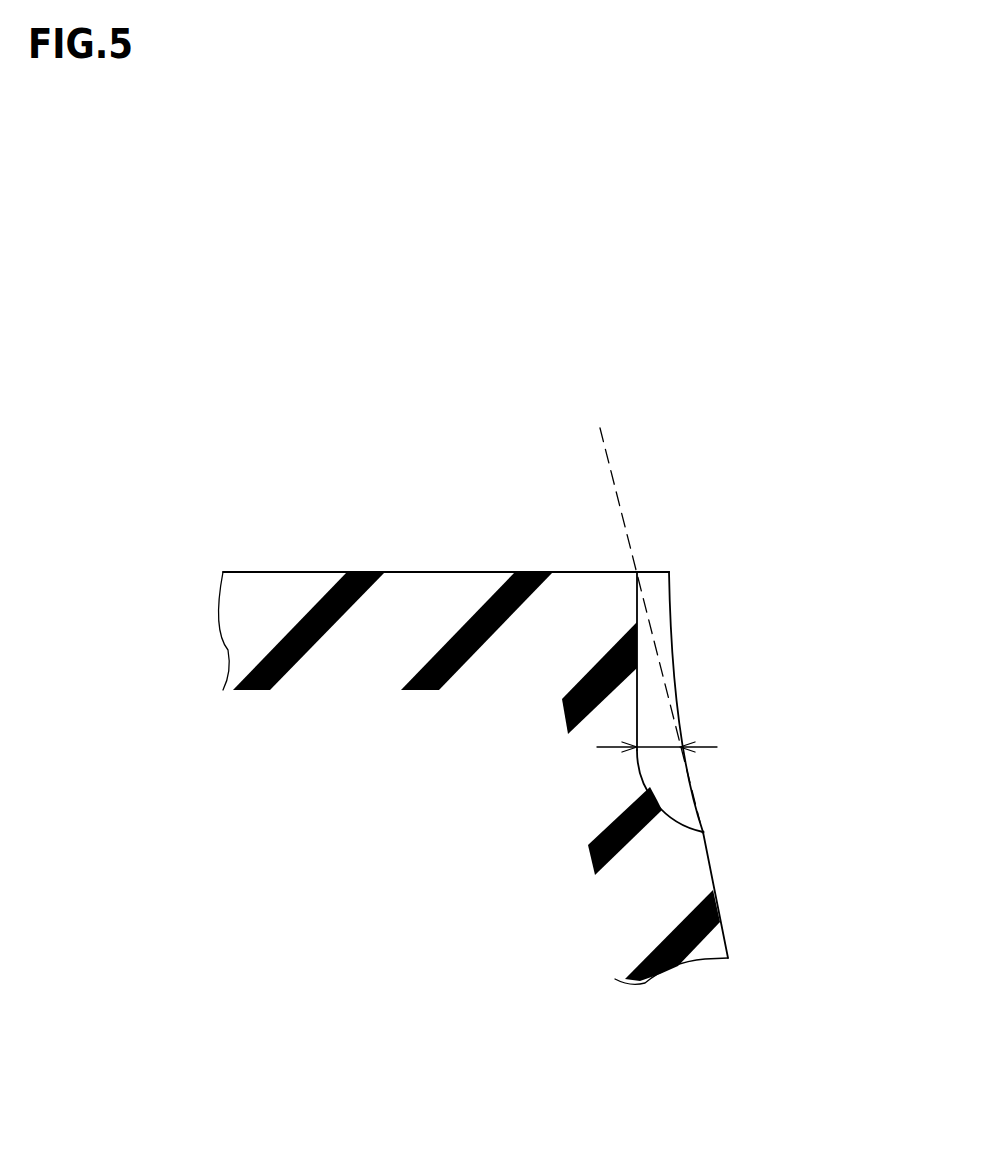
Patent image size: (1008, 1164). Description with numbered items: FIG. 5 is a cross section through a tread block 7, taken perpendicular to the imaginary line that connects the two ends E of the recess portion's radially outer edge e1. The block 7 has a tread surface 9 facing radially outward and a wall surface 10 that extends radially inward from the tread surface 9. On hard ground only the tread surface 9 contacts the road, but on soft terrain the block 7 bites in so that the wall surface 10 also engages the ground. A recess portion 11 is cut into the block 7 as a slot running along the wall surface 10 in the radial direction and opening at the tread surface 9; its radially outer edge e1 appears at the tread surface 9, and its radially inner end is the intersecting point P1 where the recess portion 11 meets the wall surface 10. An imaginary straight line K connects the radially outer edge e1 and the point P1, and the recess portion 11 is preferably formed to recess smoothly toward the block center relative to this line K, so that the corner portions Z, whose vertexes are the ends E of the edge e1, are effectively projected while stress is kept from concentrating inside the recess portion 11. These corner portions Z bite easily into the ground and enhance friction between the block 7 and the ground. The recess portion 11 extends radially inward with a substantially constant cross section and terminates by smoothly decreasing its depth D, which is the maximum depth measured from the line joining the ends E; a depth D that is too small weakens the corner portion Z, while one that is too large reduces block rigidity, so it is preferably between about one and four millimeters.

The block 7 is at (393, 902).
The tread surface 9 is at (412, 572).
The wall surface 10 is at (710, 868).
The recess portion 11 is at (637, 668).
The depth D is at (648, 772).
The end of radially outer edge E is at (670, 572).
The radially outer edge e1 is at (637, 572).
The imaginary straight line K is at (612, 480).
The corner portion Z is at (687, 579).
The intersecting point P1 is at (703, 832).